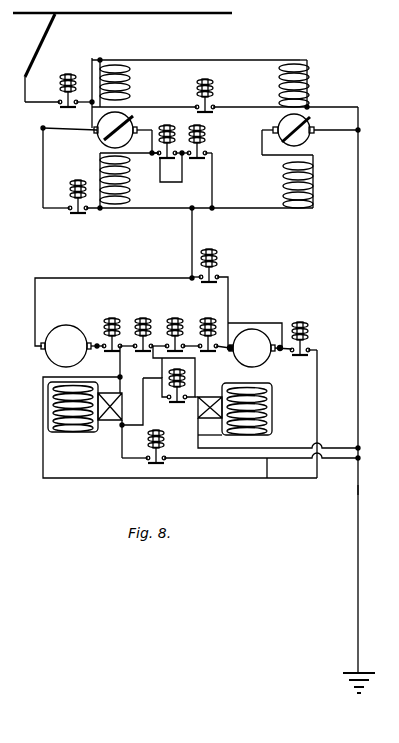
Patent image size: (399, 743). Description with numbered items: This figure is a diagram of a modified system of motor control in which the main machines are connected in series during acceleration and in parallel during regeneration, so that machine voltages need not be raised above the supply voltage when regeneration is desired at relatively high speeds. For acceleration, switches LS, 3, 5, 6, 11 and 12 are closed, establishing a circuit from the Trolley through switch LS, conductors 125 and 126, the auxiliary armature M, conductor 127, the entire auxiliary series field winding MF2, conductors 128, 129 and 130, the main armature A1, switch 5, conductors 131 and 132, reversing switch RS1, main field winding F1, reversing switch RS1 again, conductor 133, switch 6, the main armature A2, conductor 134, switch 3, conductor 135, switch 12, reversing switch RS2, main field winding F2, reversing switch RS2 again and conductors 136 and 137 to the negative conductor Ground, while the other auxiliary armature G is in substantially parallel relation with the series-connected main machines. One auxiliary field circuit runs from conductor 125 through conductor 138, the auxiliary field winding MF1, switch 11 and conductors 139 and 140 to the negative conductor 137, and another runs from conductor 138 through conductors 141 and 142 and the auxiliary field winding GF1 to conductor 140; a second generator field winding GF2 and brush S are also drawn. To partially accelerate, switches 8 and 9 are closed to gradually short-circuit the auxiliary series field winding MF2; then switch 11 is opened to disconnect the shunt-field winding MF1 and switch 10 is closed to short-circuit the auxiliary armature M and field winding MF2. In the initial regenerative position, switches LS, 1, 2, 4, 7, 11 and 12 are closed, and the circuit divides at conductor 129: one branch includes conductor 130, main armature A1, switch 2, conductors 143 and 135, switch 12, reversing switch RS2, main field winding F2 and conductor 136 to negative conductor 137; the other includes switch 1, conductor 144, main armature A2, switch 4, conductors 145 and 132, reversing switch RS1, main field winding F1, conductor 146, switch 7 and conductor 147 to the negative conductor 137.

The switch 1 is at (222, 273).
The switch 2 is at (134, 311).
The switch 3 is at (214, 325).
The switch 4 is at (308, 314).
The switch 5 is at (103, 325).
The switch 6 is at (184, 303).
The switch 7 is at (148, 441).
The switch 8 is at (200, 167).
The switch 9 is at (173, 162).
The switch 10 is at (68, 218).
The switch 11 is at (214, 108).
The switch 12 is at (172, 382).
The conductor 125 is at (41, 127).
The conductor 126 is at (77, 136).
The conductor 127 is at (153, 158).
The conductor 128 is at (168, 214).
The conductor 129 is at (192, 244).
The conductor 130 is at (146, 277).
The conductor 131 is at (120, 368).
The conductor 132 is at (134, 386).
The conductor 133 is at (146, 402).
The conductor 134 is at (275, 320).
The conductor 135 is at (195, 370).
The conductor 136 is at (262, 439).
The negative conductor 137 is at (358, 490).
The conductor 138 is at (96, 62).
The conductor 139 is at (277, 124).
The conductor 140 is at (358, 220).
The conductor 141 is at (183, 60).
The conductor 142 is at (300, 62).
The conductor 143 is at (153, 363).
The conductor 144 is at (229, 294).
The conductor 145 is at (317, 362).
The conductor 146 is at (120, 447).
The conductor 147 is at (261, 480).
The trolley Trolley is at (122, 57).
The switch LS is at (80, 64).
The auxiliary shunt-field winding MF1 is at (144, 83).
The auxiliary series field winding MF2 is at (100, 169).
The auxiliary field winding GF1 is at (275, 84).
The generator field winding GF2 is at (279, 181).
The auxiliary armature G is at (311, 121).
The auxiliary armature M is at (106, 143).
The brush S is at (135, 118).
The main armature A1 is at (72, 346).
The main armature A2 is at (260, 348).
The main field winding F1 is at (48, 410).
The main field winding F2 is at (272, 413).
The reversing switch RS1 is at (116, 408).
The reversing switch RS2 is at (199, 410).
The negative conductor Ground is at (349, 697).